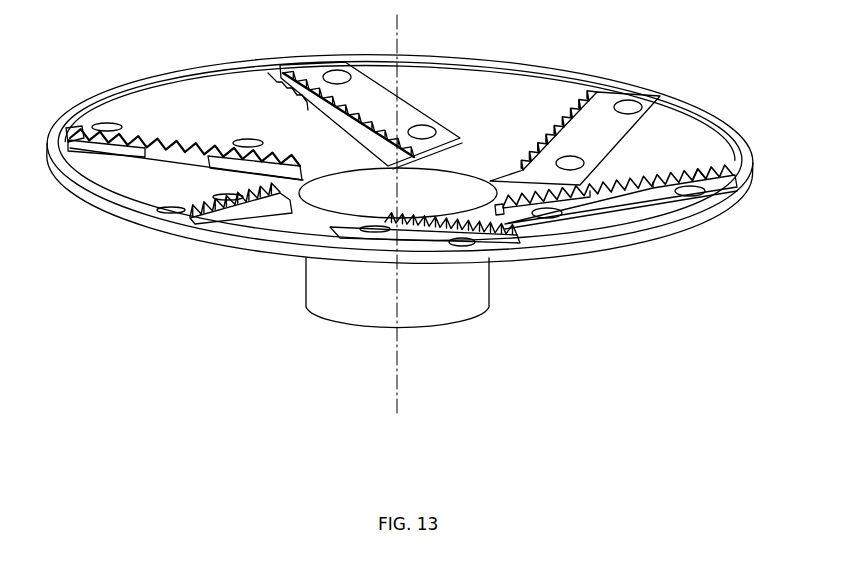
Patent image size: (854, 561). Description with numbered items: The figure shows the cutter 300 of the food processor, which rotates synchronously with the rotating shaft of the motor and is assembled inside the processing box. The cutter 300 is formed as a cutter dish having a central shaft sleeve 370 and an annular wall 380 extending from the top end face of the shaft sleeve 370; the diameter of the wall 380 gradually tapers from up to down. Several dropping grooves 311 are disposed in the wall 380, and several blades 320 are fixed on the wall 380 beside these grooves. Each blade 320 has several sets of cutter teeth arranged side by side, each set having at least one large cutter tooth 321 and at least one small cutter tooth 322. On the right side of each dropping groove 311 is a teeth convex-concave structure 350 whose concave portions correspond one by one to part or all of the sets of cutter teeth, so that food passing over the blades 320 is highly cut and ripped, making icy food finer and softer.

The cutter 300 is at (193, 292).
The dropping groove 311 is at (348, 133).
The blade 320 is at (647, 198).
The large cutter tooth 321 is at (712, 172).
The small cutter tooth 322 is at (700, 170).
The teeth convex-concave structure 350 is at (273, 91).
The shaft sleeve 370 is at (437, 296).
The annular wall 380 is at (630, 228).